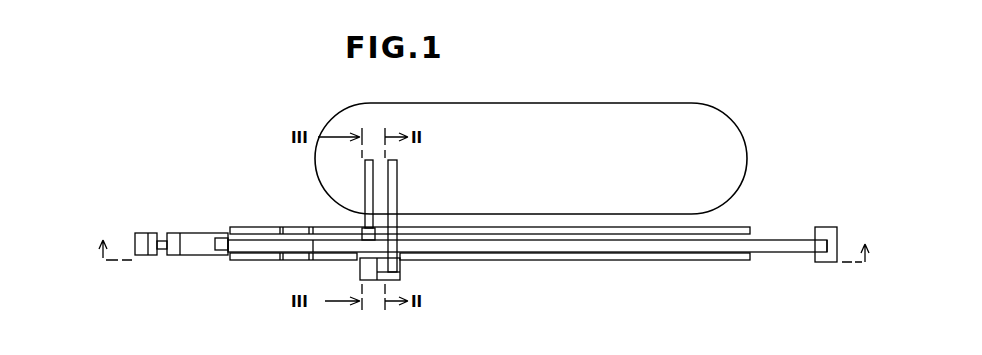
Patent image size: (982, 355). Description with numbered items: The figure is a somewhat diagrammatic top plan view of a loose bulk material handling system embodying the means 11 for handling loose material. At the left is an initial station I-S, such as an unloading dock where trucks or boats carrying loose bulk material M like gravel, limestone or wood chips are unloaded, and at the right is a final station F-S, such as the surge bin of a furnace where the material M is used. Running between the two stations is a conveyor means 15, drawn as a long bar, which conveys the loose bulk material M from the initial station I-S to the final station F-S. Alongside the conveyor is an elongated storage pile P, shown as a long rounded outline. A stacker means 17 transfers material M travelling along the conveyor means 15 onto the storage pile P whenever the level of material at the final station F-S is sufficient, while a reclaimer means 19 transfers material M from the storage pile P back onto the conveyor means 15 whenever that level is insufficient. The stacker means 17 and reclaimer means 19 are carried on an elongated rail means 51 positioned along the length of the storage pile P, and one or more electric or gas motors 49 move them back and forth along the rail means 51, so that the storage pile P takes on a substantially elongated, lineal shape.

The means for handling loose material 11 is at (617, 308).
The conveyor means 15 is at (547, 246).
The stacker means 17 is at (396, 216).
The reclaimer means 19 is at (367, 187).
The motor 49 is at (360, 272).
The rail means 51 is at (737, 227).
The storage pile P is at (597, 128).
The loose bulk material M is at (720, 128).
The initial station I-S is at (212, 290).
The final station F-S is at (836, 289).